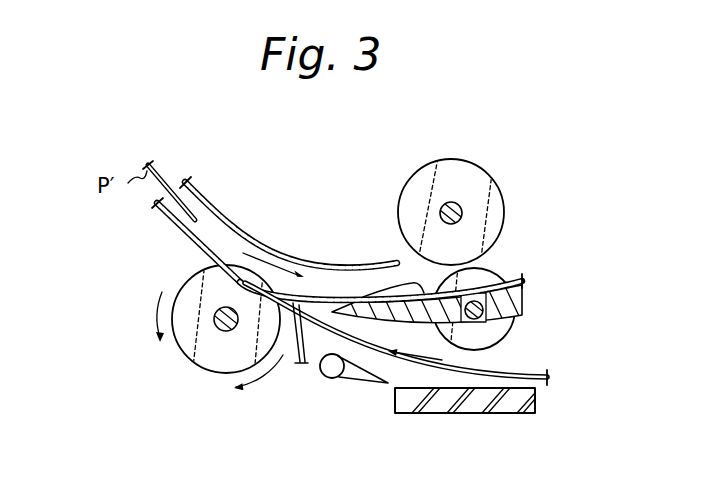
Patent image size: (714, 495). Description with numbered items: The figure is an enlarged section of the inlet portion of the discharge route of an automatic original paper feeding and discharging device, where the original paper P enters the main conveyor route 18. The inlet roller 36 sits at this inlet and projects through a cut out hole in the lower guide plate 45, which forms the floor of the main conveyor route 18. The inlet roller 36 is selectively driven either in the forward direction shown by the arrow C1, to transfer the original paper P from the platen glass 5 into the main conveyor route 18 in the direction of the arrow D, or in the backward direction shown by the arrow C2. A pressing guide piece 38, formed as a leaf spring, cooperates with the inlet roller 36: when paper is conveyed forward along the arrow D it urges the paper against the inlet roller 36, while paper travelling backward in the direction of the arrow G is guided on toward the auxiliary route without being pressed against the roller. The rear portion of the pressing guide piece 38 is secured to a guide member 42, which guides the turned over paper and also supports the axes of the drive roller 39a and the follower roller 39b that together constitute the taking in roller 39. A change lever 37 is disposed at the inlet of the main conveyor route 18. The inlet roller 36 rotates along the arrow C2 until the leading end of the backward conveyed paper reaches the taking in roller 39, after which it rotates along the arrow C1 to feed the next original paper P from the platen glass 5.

The platen glass 5 is at (468, 401).
The main conveyor route 18 is at (213, 226).
The inlet roller 36 is at (195, 363).
The change lever 37 is at (345, 378).
The pressing guide piece 38 is at (326, 291).
The taking in roller 39 is at (496, 236).
The drive roller 39a is at (497, 215).
The follower roller 39b is at (500, 328).
The guide member 42 is at (520, 292).
The lower guide plate 45 is at (189, 238).
The original paper P is at (547, 385).
The arrow G (backward conveying direction) G is at (260, 257).
The arrow D (forward conveying direction) D is at (396, 334).
The arrow C1 (forward rotation direction) C1 is at (145, 317).
The arrow C2 (backward rotation direction) C2 is at (265, 382).